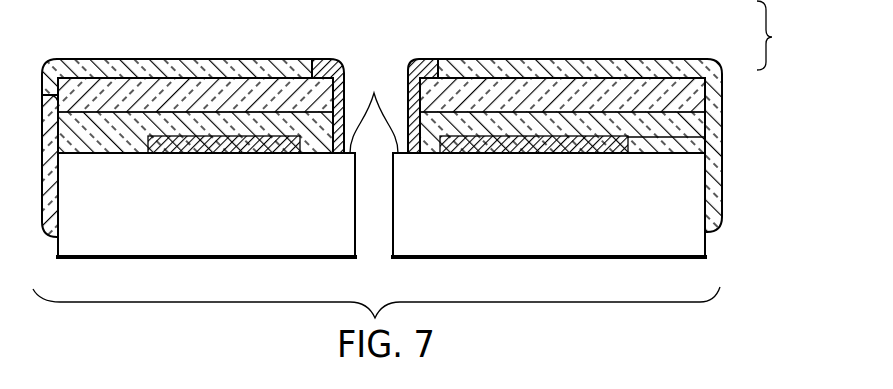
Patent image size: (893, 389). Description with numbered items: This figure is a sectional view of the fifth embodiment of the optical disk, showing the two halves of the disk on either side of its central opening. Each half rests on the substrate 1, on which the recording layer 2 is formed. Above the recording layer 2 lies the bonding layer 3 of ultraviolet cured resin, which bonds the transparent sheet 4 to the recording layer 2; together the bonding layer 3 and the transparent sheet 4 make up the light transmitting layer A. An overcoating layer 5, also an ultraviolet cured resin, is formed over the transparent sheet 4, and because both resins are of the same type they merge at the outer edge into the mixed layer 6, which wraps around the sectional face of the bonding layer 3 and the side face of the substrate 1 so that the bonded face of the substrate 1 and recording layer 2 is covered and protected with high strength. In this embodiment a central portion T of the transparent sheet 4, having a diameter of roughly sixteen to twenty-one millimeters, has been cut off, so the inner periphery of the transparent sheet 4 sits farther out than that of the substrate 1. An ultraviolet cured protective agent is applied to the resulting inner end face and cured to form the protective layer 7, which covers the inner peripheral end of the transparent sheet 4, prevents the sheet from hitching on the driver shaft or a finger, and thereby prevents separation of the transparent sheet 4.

The substrate 1 is at (690, 208).
The recording layer 2 is at (704, 137).
The bonding layer 3 is at (675, 118).
The transparent sheet 4 is at (675, 82).
The overcoating layer 5 is at (270, 59).
The mixed layer 6 is at (46, 238).
The protective layer 7 is at (330, 59).
The cut-off portion of the transparent sheet T is at (374, 110).
The light transmitting layer A is at (774, 35).